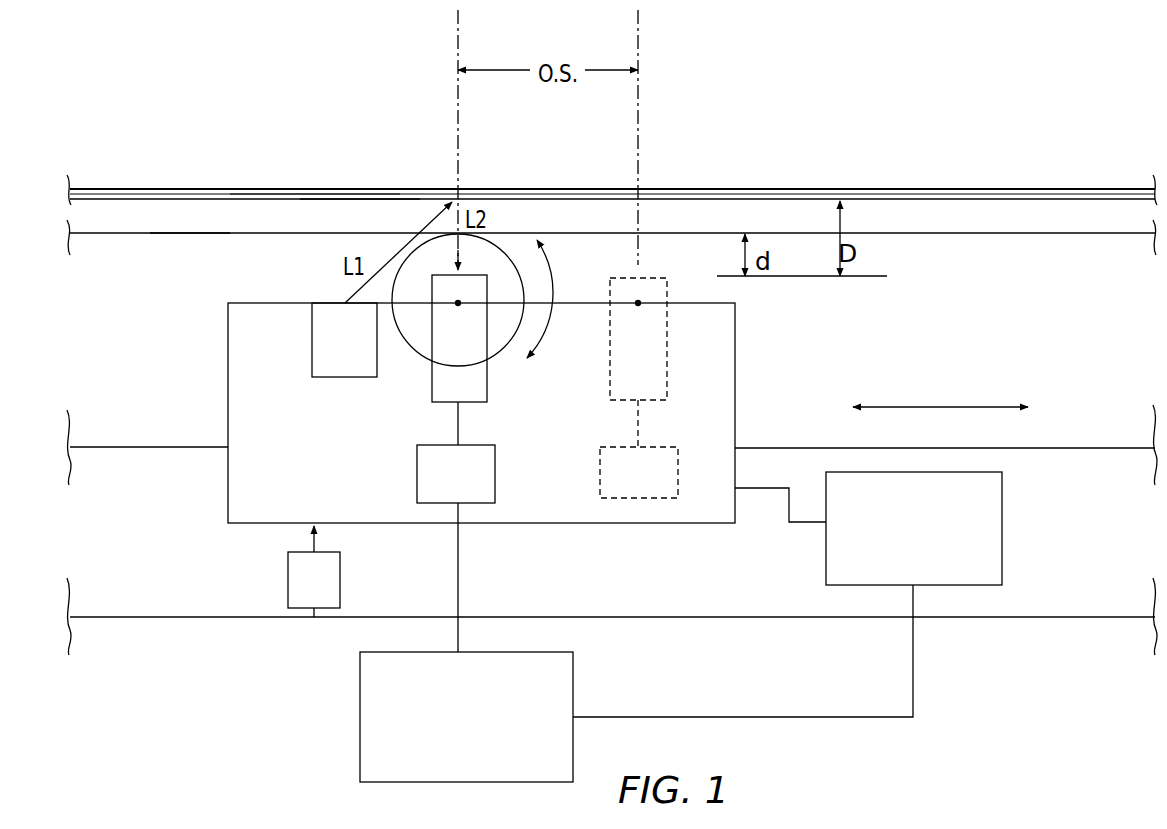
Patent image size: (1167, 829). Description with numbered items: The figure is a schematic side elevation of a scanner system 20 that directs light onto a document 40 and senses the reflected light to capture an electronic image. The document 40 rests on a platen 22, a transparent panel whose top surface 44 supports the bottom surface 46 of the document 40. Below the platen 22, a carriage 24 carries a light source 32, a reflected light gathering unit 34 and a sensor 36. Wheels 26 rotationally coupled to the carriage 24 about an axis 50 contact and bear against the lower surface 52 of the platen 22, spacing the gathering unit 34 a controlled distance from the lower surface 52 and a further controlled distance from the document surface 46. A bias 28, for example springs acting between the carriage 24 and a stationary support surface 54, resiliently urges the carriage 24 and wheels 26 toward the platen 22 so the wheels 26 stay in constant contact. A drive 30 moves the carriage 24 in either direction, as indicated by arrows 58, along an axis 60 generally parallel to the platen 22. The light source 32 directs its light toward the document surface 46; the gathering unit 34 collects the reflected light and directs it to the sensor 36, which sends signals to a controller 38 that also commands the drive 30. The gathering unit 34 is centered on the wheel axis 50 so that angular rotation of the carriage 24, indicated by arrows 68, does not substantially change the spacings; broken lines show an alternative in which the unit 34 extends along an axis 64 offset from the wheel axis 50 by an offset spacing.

The scanner system 20 is at (94, 90).
The platen 22 is at (224, 213).
The carriage 24 is at (728, 368).
The wheels 26 is at (490, 355).
The bias 28 is at (340, 580).
The drive 30 is at (1002, 548).
The light source 32 is at (324, 378).
The reflected light gathering unit 34 is at (432, 385).
The sensor 36 is at (495, 485).
The controller 38 is at (573, 685).
The document 40 is at (783, 190).
The top surface of platen 44 is at (357, 200).
The bottom surface of document 46 is at (311, 196).
The axis 50 is at (461, 300).
The lower surface of platen 52 is at (170, 232).
The stationary support surface 54 is at (160, 617).
The arrows 58 is at (970, 403).
The axis 60 is at (1100, 448).
The axis 64 is at (640, 305).
The arrows 68 is at (552, 340).